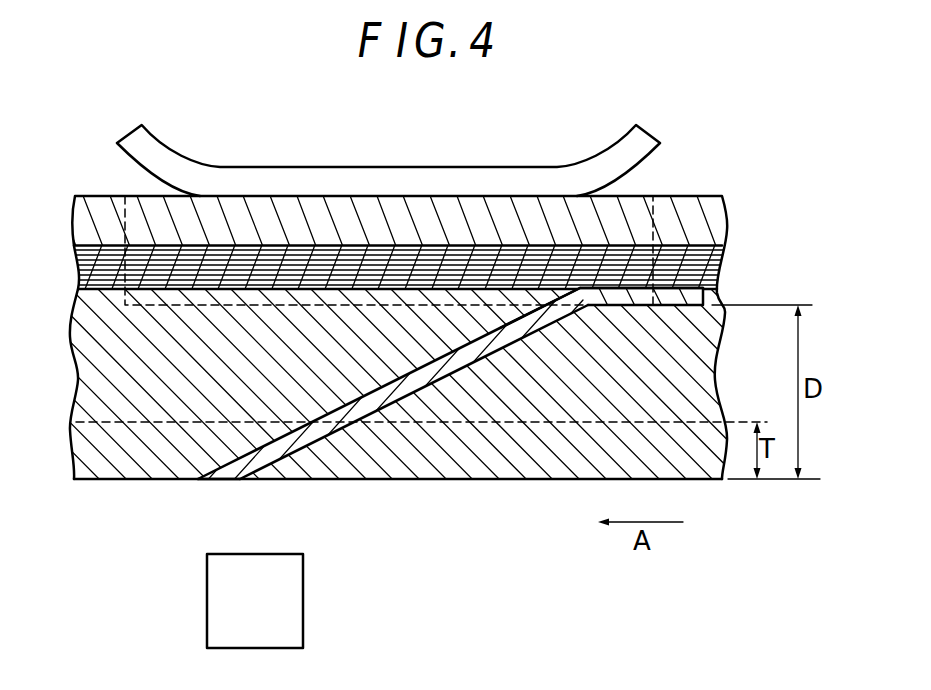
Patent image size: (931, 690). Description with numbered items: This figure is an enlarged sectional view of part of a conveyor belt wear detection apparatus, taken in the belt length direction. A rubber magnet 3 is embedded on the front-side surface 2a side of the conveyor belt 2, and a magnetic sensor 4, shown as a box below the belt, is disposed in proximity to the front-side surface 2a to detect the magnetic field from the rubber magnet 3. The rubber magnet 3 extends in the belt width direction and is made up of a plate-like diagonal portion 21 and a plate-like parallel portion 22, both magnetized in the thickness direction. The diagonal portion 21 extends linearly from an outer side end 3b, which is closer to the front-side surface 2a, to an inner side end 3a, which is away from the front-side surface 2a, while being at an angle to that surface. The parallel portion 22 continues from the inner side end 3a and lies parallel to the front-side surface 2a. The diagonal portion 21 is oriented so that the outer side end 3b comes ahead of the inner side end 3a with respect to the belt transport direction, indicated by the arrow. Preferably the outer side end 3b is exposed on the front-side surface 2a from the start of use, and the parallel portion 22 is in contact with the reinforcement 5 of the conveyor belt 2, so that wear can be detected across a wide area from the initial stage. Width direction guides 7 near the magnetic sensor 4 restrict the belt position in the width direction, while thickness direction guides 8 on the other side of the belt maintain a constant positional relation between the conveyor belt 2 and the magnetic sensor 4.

The conveyor belt 2 is at (683, 194).
The front-side surface 2a is at (697, 480).
The rubber magnet 3 is at (557, 546).
The inner side end 3a is at (572, 306).
The outer side end 3b is at (213, 478).
The magnetic sensor 4 is at (288, 600).
The reinforcement 5 is at (485, 270).
The width direction guides 7 is at (123, 221).
The thickness direction guides 8 is at (396, 180).
The diagonal portion 21 is at (417, 378).
The parallel portion 22 is at (620, 300).